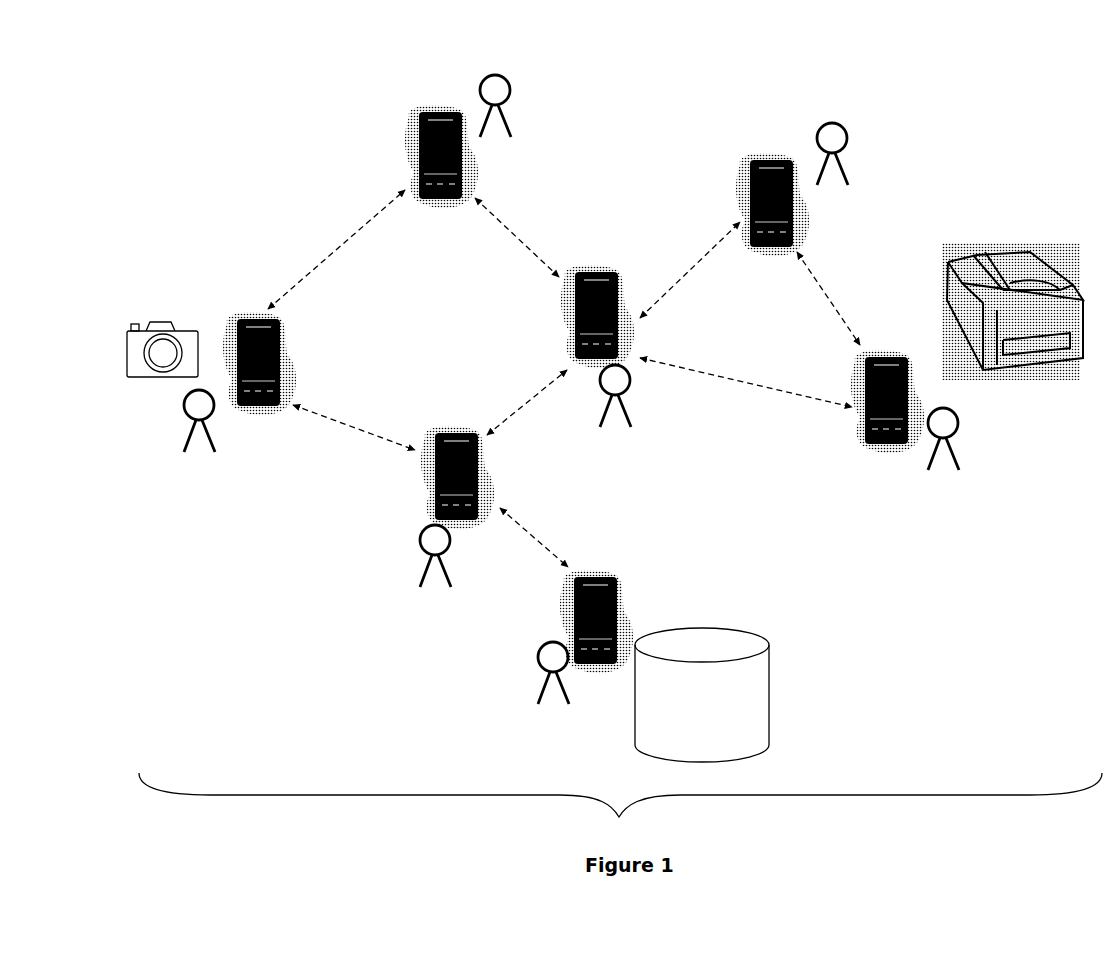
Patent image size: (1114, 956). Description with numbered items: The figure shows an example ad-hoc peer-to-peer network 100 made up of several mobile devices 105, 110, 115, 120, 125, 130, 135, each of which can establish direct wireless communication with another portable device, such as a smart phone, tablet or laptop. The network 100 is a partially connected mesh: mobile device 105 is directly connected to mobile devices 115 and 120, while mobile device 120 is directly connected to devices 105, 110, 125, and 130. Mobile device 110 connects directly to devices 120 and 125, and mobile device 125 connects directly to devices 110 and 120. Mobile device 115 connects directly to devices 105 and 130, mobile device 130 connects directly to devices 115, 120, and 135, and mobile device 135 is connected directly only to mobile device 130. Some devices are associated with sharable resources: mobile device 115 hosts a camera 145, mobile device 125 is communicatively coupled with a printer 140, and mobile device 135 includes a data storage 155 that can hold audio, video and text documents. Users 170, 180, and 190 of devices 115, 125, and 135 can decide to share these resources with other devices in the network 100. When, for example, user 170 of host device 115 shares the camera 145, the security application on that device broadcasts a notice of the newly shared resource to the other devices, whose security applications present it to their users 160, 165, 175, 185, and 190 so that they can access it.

The ad-hoc peer-to-peer network 100 is at (226, 140).
The mobile device 105 is at (418, 113).
The mobile device 110 is at (737, 172).
The mobile device 115 is at (287, 337).
The mobile device 120 is at (609, 268).
The mobile device 125 is at (863, 438).
The mobile device 130 is at (433, 498).
The mobile device 135 is at (603, 575).
The printer 140 is at (1000, 243).
The camera 145 is at (153, 321).
The data storage 155 is at (687, 712).
The user 160 is at (512, 92).
The user 165 is at (848, 137).
The user 170 is at (216, 445).
The user 175 is at (628, 413).
The user 180 is at (960, 457).
The user 185 is at (419, 548).
The user 190 is at (537, 658).